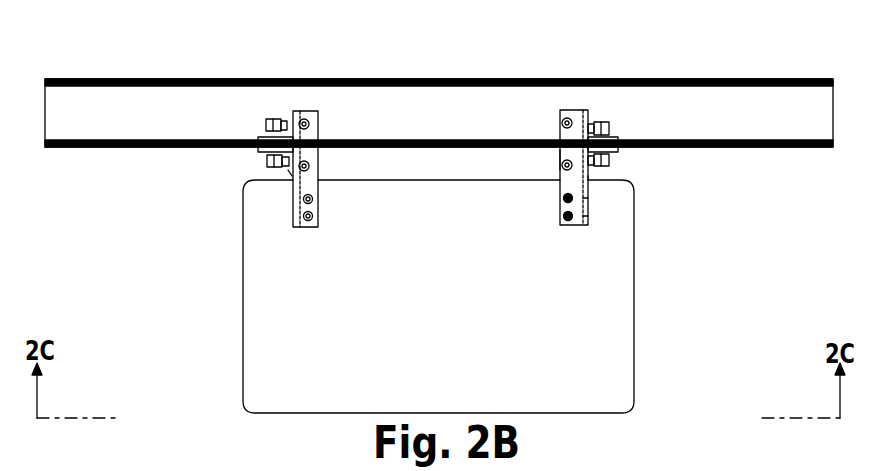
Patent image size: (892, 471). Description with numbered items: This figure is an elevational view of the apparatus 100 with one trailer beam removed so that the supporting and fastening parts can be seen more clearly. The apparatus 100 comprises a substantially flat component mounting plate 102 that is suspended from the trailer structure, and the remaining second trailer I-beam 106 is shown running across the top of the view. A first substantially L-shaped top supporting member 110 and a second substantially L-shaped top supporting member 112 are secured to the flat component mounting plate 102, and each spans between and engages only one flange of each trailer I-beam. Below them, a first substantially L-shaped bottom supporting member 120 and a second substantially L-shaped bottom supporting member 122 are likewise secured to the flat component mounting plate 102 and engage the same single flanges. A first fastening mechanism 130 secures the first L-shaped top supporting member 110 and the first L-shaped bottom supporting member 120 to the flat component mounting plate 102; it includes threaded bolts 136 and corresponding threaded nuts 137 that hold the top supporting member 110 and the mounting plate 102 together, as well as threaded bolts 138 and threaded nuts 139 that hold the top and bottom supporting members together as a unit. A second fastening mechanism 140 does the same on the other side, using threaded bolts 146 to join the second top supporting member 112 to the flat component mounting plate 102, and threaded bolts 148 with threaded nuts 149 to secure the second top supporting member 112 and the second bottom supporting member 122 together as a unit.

The apparatus 100 is at (680, 26).
The flat component mounting plate 102 is at (636, 306).
The second trailer I-beam 106 is at (800, 78).
The first L-shaped top supporting member 110 is at (590, 111).
The second L-shaped top supporting member 112 is at (296, 112).
The first L-shaped bottom supporting member 120 is at (590, 182).
The second L-shaped bottom supporting member 122 is at (291, 176).
The first fastening mechanism 130 is at (548, 152).
The threaded bolts 136 is at (588, 200).
The threaded nuts 137 is at (564, 199).
The threaded bolts 138 is at (614, 125).
The threaded nuts 139 is at (575, 117).
The second fastening mechanism 140 is at (330, 149).
The threaded bolts 146 is at (312, 218).
The threaded bolts 148 is at (279, 119).
The threaded nuts 149 is at (268, 128).